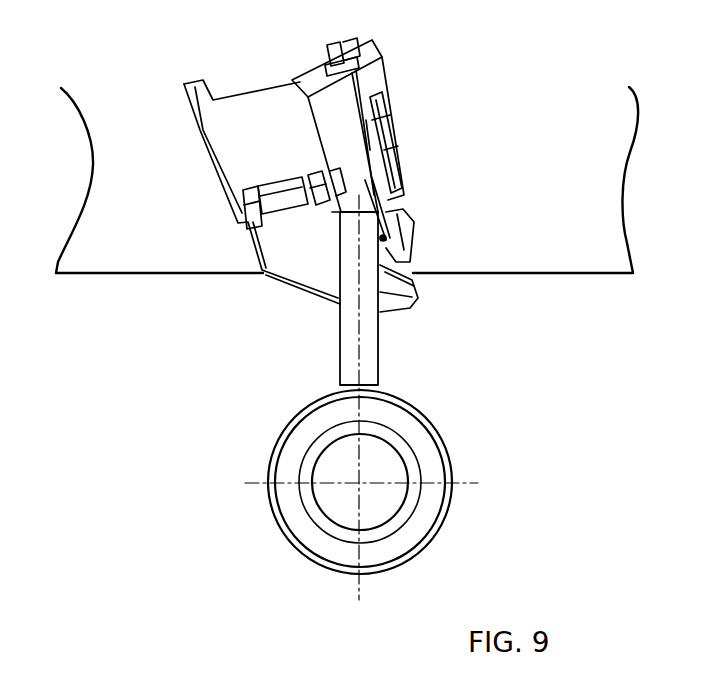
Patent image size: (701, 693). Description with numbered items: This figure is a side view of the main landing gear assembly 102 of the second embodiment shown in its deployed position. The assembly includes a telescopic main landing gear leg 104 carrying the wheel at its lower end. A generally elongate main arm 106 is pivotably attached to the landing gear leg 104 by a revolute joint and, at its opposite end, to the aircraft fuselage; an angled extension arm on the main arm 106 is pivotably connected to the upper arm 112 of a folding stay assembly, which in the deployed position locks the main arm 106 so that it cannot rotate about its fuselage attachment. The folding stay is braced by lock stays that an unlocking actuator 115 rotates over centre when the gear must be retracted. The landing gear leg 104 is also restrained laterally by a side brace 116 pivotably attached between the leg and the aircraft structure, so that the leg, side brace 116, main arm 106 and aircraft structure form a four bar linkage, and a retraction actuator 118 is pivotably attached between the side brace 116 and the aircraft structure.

The main landing gear assembly 102 is at (206, 350).
The main landing gear leg 104 is at (373, 352).
The main arm 106 is at (252, 146).
The upper arm 112 is at (376, 88).
The unlocking actuator 115 is at (390, 164).
The side brace 116 is at (393, 251).
The retraction actuator 118 is at (354, 130).